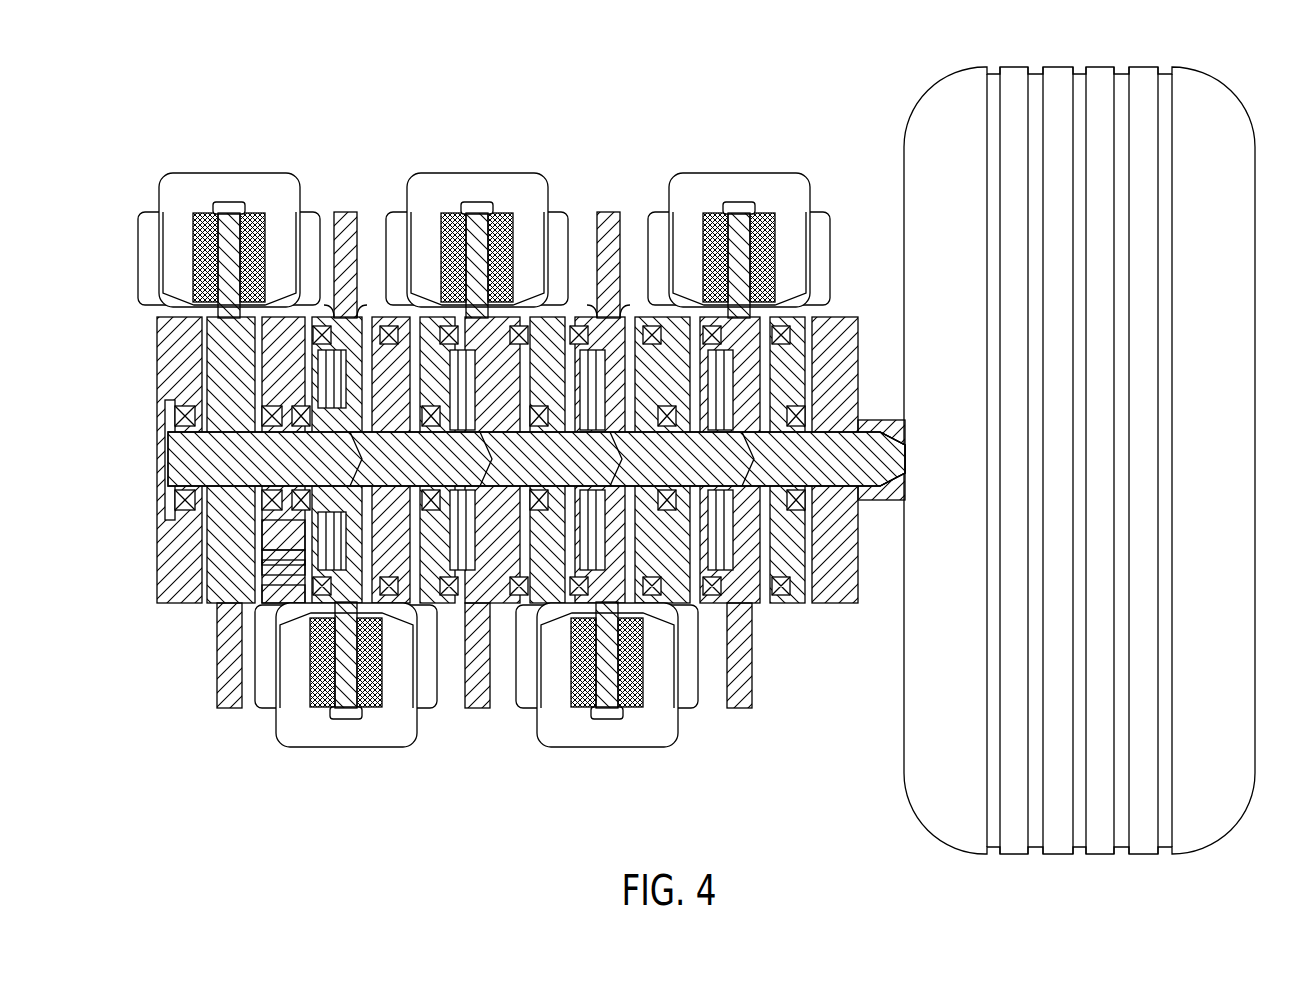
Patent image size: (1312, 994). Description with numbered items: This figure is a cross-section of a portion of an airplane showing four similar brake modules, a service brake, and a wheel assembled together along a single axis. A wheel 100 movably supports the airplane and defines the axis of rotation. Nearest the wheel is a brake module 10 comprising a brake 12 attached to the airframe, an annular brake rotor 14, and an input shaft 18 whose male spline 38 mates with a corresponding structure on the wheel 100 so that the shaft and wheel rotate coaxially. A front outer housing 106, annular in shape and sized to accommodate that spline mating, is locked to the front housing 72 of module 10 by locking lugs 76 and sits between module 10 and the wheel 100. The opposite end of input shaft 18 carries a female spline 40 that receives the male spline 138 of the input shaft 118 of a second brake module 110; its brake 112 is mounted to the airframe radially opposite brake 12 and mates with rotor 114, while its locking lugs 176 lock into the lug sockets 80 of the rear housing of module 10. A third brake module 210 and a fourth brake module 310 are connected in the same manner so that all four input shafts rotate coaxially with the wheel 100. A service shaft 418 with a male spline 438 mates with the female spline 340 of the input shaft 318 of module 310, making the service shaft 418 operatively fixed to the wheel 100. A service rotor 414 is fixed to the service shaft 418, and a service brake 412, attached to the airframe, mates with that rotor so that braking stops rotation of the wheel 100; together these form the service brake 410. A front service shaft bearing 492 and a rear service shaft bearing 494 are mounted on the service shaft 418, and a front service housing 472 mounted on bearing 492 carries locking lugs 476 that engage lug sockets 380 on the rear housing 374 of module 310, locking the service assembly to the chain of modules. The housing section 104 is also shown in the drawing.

The brake module 10 is at (744, 193).
The brake 12 is at (780, 186).
The annular brake rotor 14 is at (739, 702).
The input shaft 18 is at (848, 440).
The male spline 38 is at (858, 486).
The female spline 40 is at (790, 365).
The front housing 72 is at (798, 560).
The locking lugs 76 is at (822, 352).
The lug sockets 80 is at (757, 275).
The wheel 100 is at (1235, 118).
The housing section 104 is at (850, 565).
The front outer housing 106 is at (177, 588).
The brake module 110 is at (607, 719).
The brake 112 is at (656, 744).
The rotor 114 is at (604, 218).
The input shaft 118 is at (733, 482).
The male spline 138 is at (741, 500).
The locking lugs 176 is at (672, 330).
The third brake module 210 is at (483, 138).
The fourth brake module 310 is at (349, 772).
The input shaft 318 is at (470, 560).
The female spline 340 is at (290, 447).
The rear housing 374 is at (287, 595).
The lug sockets 380 is at (292, 555).
The service brake 410 is at (229, 193).
The service brake 412 is at (262, 186).
The service rotor 414 is at (231, 702).
The service shaft 418 is at (302, 473).
The male spline 438 is at (272, 432).
The front service housing 472 is at (292, 565).
The locking lugs 476 is at (292, 545).
The front service shaft bearing 492 is at (258, 412).
The rear service shaft bearing 494 is at (177, 418).